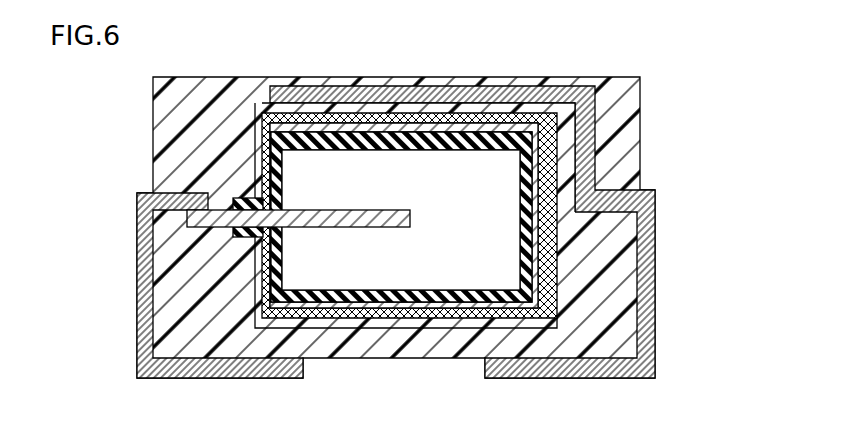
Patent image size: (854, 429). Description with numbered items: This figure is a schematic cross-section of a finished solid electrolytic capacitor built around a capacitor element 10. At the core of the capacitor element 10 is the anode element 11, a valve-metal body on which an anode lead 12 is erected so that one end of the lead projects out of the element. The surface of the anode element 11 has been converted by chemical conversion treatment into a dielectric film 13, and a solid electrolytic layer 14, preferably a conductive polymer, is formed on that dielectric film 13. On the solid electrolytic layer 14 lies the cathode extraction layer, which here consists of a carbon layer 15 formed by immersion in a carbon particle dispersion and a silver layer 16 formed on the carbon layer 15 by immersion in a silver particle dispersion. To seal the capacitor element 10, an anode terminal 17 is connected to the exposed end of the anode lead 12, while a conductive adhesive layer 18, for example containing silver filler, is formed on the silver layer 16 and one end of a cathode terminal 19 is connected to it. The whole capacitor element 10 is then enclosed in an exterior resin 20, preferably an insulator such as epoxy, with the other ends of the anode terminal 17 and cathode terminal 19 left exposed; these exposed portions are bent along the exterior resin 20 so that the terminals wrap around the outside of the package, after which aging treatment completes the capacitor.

The capacitor element 10 is at (506, 188).
The anode element 11 is at (490, 215).
The anode lead 12 is at (202, 218).
The dielectric film 13 is at (523, 233).
The solid electrolytic layer 14 is at (535, 258).
The carbon layer 15 is at (546, 283).
The silver layer 16 is at (557, 305).
The anode terminal 17 is at (145, 263).
The adhesive layer 18 is at (484, 108).
The cathode terminal 19 is at (546, 100).
The exterior resin 20 is at (607, 112).